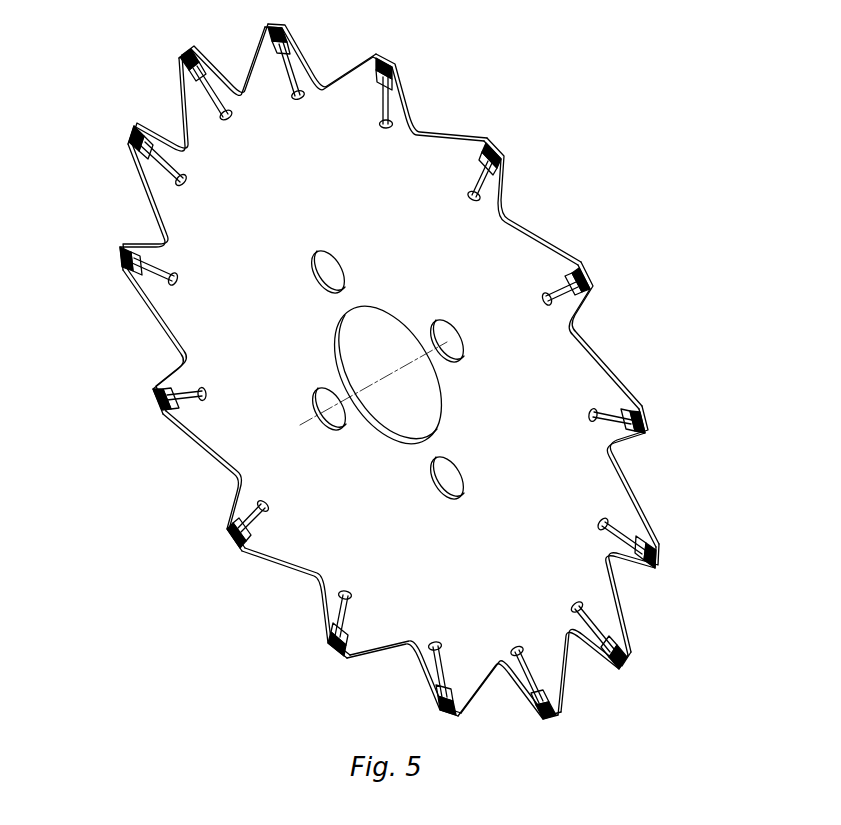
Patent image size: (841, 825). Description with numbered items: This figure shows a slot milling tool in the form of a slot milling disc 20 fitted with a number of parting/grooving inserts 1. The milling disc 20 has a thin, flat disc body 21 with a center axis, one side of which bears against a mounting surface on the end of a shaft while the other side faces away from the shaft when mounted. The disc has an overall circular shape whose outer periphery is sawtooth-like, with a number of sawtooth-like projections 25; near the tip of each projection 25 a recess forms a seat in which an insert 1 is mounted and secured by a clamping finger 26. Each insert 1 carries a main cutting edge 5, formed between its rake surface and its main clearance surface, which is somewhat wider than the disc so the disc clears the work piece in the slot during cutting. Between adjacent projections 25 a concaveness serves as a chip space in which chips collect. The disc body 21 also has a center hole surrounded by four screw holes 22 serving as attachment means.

The saw blade 20 is at (598, 318).
The disc body 21 is at (262, 407).
The fastening hole 22 is at (333, 355).
The tooth 25 is at (623, 407).
The cutting insert 1 is at (623, 417).
The main cutting edge 5 is at (622, 418).
The fastening pin 26 is at (623, 423).